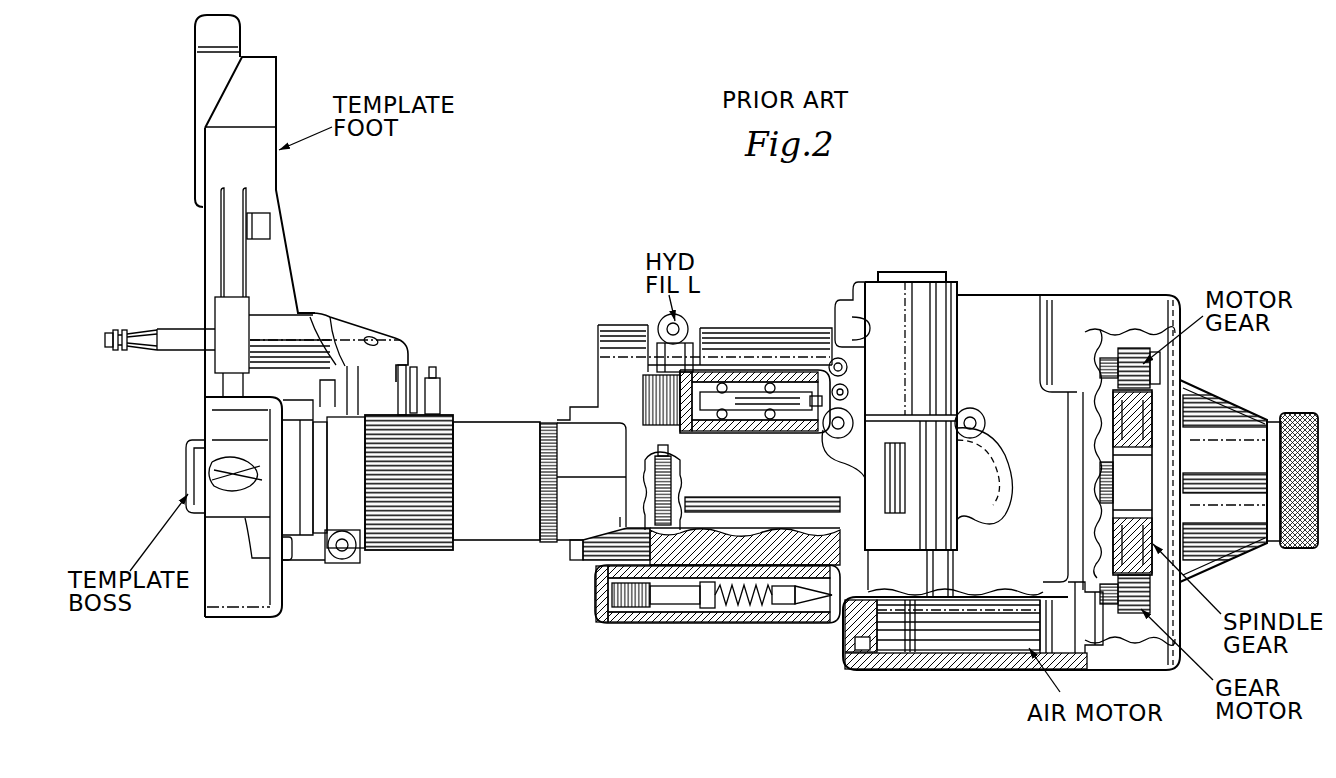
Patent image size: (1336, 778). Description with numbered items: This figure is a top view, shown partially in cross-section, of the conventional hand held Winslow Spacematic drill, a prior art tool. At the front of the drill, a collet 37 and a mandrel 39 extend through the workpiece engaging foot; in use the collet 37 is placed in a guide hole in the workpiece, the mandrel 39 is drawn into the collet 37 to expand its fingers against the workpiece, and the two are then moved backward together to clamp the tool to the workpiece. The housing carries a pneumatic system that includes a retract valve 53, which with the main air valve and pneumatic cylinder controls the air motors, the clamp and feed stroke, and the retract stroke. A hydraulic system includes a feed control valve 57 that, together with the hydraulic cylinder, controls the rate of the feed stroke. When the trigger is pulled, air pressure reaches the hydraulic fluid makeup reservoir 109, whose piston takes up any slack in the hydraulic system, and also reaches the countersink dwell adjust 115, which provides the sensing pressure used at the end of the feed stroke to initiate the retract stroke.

The collet 37 is at (179, 324).
The mandrel 39 is at (114, 353).
The retract valve 53 is at (686, 389).
The feed control valve 57 is at (722, 609).
The hydraulic fluid makeup reservoir 109 is at (781, 324).
The countersink dwell adjust 115 is at (653, 508).